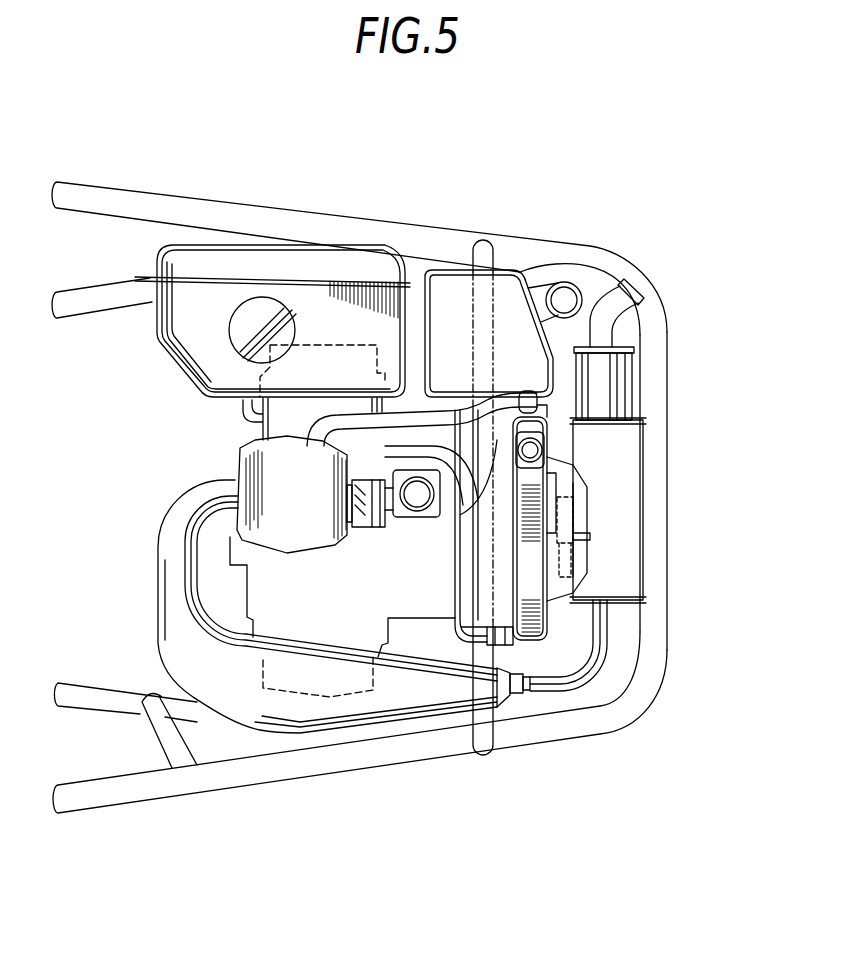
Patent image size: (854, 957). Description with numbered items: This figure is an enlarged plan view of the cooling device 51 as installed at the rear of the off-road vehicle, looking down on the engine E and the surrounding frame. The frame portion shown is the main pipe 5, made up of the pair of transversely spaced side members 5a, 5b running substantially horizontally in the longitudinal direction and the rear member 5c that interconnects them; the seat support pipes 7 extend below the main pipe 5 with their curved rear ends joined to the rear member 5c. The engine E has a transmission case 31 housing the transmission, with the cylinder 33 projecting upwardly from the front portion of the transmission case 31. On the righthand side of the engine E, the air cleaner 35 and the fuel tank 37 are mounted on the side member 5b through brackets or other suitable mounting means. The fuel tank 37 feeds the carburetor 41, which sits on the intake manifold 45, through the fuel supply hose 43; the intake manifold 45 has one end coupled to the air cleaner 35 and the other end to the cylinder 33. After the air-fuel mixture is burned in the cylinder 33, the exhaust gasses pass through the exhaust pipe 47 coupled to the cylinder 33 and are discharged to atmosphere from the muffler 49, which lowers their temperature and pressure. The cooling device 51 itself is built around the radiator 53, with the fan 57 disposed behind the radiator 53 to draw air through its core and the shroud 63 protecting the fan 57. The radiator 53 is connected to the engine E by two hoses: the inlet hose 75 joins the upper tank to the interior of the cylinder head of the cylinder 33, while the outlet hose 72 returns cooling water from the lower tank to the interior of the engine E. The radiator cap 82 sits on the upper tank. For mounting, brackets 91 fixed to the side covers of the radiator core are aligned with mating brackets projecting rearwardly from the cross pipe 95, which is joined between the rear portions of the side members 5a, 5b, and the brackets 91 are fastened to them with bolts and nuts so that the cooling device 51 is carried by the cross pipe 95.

The main pipe 5 is at (390, 497).
The side member 5a is at (166, 800).
The side member 5b is at (150, 190).
The rear member 5c is at (667, 408).
The seat support pipe 7 is at (102, 310).
The transmission case 31 is at (413, 607).
The cylinder 33 is at (247, 455).
The air cleaner 35 is at (440, 283).
The fuel tank 37 is at (252, 255).
The carburetor 41 is at (418, 517).
The fuel supply hose 43 is at (397, 373).
The intake manifold 45 is at (460, 443).
The exhaust pipe 47 is at (177, 513).
The muffler 49 is at (617, 490).
The cooling device 51 is at (595, 478).
The radiator 53 is at (530, 560).
The fan 57 is at (570, 505).
The shroud 63 is at (585, 535).
The outlet hose 72 is at (457, 580).
The inlet hose 75 is at (433, 417).
The radiator cap 82 is at (543, 452).
The bracket 91 is at (507, 407).
The cross pipe 95 is at (490, 297).
The engine E is at (247, 415).